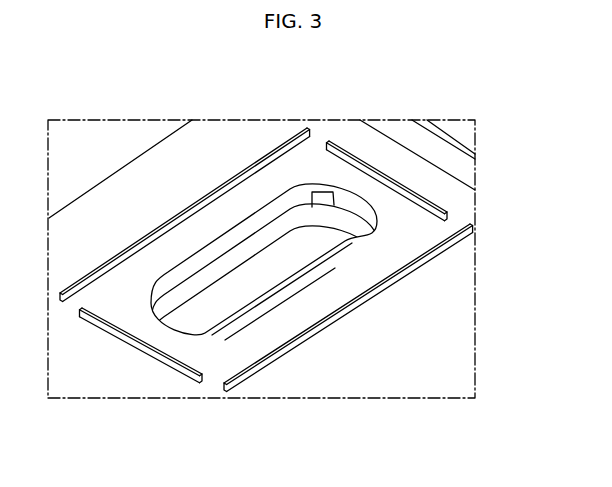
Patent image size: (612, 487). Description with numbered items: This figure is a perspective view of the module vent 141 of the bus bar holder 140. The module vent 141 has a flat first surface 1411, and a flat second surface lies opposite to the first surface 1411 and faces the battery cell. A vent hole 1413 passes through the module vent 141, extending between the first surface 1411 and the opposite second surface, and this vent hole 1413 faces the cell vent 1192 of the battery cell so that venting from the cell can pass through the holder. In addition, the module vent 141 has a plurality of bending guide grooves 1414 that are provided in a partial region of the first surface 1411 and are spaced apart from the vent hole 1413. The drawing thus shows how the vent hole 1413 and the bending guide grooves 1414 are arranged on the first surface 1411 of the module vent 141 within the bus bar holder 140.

The bus bar holder 140 is at (82, 184).
The module vent 141 is at (436, 184).
The first surface 1411 is at (414, 237).
The vent hole 1413 is at (230, 243).
The bending guide grooves 1414 is at (248, 367).
The cell vent 1192 is at (305, 262).